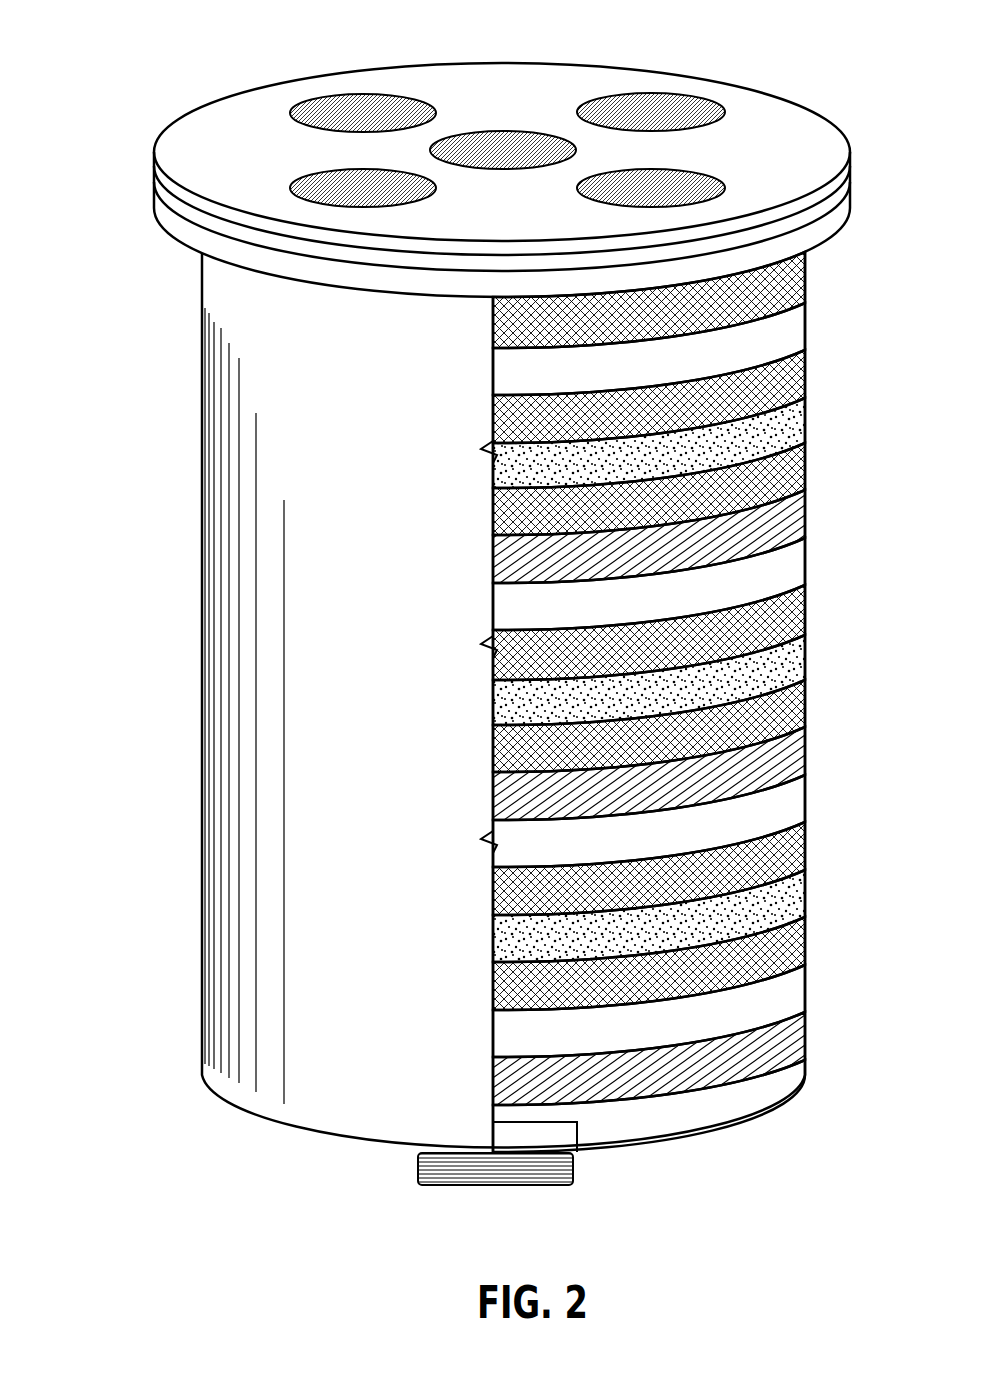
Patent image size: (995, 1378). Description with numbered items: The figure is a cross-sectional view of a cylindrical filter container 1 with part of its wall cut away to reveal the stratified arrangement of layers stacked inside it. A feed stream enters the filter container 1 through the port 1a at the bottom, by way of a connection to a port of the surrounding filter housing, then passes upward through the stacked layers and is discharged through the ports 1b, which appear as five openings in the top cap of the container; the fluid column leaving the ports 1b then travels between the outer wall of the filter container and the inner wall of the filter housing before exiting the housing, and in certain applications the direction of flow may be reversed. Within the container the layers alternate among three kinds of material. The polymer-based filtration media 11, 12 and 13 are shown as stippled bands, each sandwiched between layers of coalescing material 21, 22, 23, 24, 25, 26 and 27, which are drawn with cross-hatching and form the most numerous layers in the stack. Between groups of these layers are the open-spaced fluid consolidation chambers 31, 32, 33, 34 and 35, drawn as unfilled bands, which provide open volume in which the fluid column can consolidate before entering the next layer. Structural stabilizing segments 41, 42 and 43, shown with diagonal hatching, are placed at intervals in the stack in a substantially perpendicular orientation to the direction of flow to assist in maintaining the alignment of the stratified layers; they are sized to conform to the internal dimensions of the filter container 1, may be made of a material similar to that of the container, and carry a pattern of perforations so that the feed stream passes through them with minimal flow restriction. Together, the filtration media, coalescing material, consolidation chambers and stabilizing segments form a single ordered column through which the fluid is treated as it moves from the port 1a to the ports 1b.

The filter container 1 is at (113, 96).
The port 1a is at (418, 1178).
The ports 1b is at (713, 182).
The polymer-based filtration media 11 is at (795, 896).
The polymer-based filtration media 12 is at (795, 657).
The polymer-based filtration media 13 is at (795, 416).
The coalescing material 21 is at (795, 944).
The coalescing material 22 is at (795, 847).
The coalescing material 23 is at (795, 704).
The coalescing material 24 is at (795, 608).
The coalescing material 25 is at (795, 464).
The coalescing material 26 is at (795, 368).
The coalescing material 27 is at (795, 275).
The open-spaced fluid consolidation chamber 31 is at (795, 1078).
The open-spaced fluid consolidation chamber 32 is at (795, 991).
The open-spaced fluid consolidation chamber 33 is at (795, 799).
The open-spaced fluid consolidation chamber 34 is at (795, 561).
The open-spaced fluid consolidation chamber 35 is at (795, 318).
The structural stabilizing segment 41 is at (795, 1037).
The structural stabilizing segment 42 is at (795, 751).
The structural stabilizing segment 43 is at (795, 512).